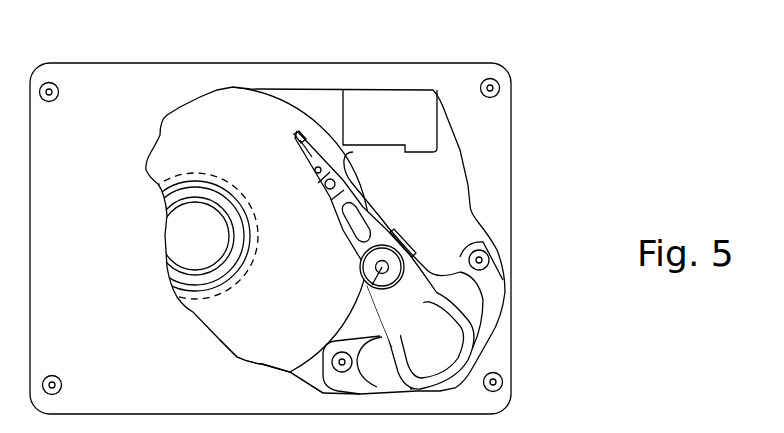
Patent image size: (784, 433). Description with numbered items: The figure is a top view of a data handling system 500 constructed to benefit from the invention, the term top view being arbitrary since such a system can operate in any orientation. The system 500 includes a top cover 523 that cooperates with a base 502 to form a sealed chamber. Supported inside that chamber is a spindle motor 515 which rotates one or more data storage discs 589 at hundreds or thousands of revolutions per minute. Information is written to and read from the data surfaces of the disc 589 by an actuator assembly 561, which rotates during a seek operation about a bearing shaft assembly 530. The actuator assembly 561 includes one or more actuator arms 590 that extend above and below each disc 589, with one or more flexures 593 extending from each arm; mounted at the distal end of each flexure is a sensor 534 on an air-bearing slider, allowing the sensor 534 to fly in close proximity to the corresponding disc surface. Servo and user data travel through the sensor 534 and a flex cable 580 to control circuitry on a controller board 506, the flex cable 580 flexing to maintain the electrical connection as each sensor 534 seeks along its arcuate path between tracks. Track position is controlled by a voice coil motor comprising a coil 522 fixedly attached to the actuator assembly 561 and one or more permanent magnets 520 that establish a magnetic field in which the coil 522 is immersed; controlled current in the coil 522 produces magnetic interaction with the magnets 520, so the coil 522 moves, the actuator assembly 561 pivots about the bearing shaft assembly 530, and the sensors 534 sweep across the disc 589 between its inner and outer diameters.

The system 500 is at (562, 58).
The base 502 is at (305, 107).
The controller board 506 is at (397, 112).
The spindle motor 515 is at (187, 233).
The permanent magnets 520 is at (463, 283).
The coil 522 is at (473, 352).
The top cover 523 is at (114, 103).
The bearing shaft assembly 530 is at (365, 252).
The sensor 534 is at (293, 137).
The actuator assembly 561 is at (382, 268).
The flex cable 580 is at (369, 214).
The data storage disc 589 is at (235, 325).
The actuator arms 590 is at (340, 226).
The flexures 593 is at (310, 158).